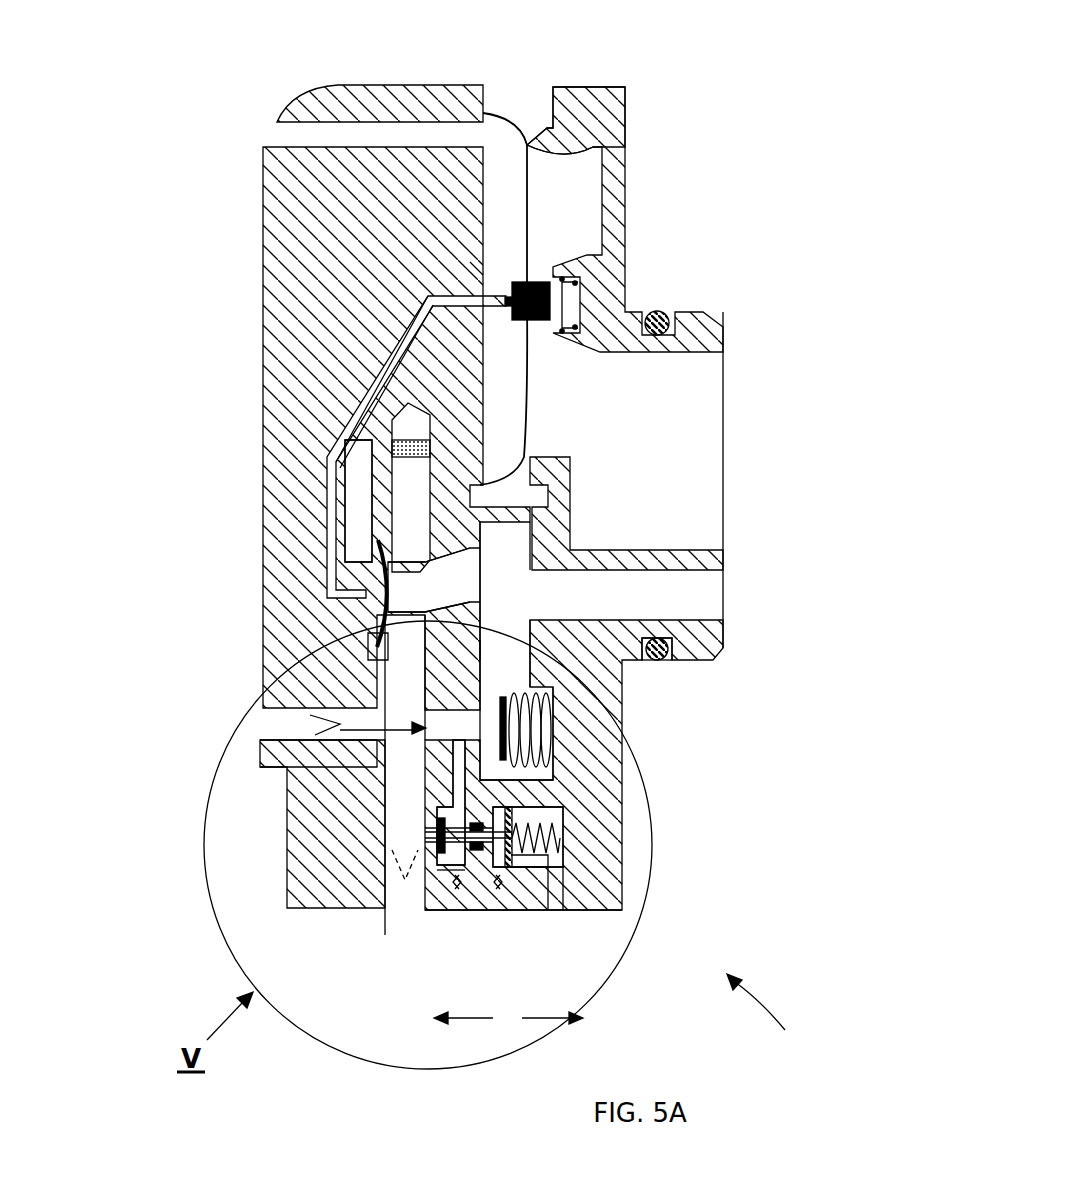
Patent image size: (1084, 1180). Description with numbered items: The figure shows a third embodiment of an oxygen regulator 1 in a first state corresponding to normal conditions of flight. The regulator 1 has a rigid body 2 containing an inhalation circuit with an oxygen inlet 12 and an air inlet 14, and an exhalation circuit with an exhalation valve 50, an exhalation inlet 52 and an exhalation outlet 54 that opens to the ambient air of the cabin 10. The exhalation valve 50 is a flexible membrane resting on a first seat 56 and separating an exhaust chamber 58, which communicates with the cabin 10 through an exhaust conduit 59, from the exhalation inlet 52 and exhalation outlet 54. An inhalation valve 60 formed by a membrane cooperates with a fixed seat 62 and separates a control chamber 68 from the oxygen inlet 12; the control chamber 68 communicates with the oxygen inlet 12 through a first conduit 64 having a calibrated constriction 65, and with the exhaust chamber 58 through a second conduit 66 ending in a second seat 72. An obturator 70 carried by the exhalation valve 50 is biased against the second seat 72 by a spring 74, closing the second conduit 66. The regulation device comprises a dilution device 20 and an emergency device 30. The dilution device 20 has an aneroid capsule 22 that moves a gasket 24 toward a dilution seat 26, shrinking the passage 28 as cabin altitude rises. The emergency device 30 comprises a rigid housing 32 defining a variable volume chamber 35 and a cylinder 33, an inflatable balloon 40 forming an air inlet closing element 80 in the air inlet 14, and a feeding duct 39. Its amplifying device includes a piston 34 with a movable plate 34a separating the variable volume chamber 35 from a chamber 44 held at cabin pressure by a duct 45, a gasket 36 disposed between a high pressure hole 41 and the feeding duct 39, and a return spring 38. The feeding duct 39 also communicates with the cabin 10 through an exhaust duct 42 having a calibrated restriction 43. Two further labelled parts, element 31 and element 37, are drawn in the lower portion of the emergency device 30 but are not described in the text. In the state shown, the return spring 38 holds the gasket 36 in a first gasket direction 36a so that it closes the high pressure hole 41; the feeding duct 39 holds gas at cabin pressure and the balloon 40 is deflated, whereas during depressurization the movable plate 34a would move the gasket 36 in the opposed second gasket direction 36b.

The regulator 1 is at (767, 1011).
The rigid body 2 is at (290, 178).
The cabin 10 is at (61, 536).
The oxygen inlet 12 is at (400, 900).
The air inlet 14 is at (255, 735).
The dilution device 20 is at (558, 752).
The aneroid capsule 22 is at (555, 722).
The gasket 24 is at (520, 688).
The dilution seat 26 is at (485, 655).
The passage 28 is at (495, 685).
The emergency device 30 is at (578, 795).
The bottom plate 31 is at (500, 913).
The rigid housing 32 is at (566, 810).
The cylinder 33 is at (563, 840).
The piston 34 is at (458, 897).
The movable plate 34a is at (567, 913).
The variable volume chamber 35 is at (481, 913).
The gasket 36 is at (440, 895).
The first gasket direction 36a is at (550, 1037).
The second gasket direction 36b is at (463, 1037).
The partition 37 is at (517, 913).
The return spring 38 is at (560, 855).
The feeding duct 39 is at (462, 770).
The inflatable balloon 40 is at (365, 768).
The high pressure hole 41 is at (427, 833).
The exhaust duct 42 is at (453, 910).
The calibrated restriction 43 is at (445, 880).
The chamber 44 is at (565, 875).
The duct 45 is at (580, 917).
The exhalation valve 50 is at (530, 202).
The exhalation inlet 52 is at (665, 460).
The exhalation outlet 54 is at (520, 97).
The first seat 56 is at (580, 147).
The exhaust chamber 58 is at (500, 232).
The exhaust conduit 59 is at (355, 132).
The inhalation valve 60 is at (395, 580).
The fixed seat 62 is at (378, 565).
The first conduit 64 is at (345, 435).
The calibrated constriction 65 is at (355, 478).
The second conduit 66 is at (390, 355).
The control chamber 68 is at (370, 640).
The obturator 70 is at (530, 282).
The second seat 72 is at (510, 300).
The spring 74 is at (580, 297).
The air inlet closing element 80 is at (395, 730).